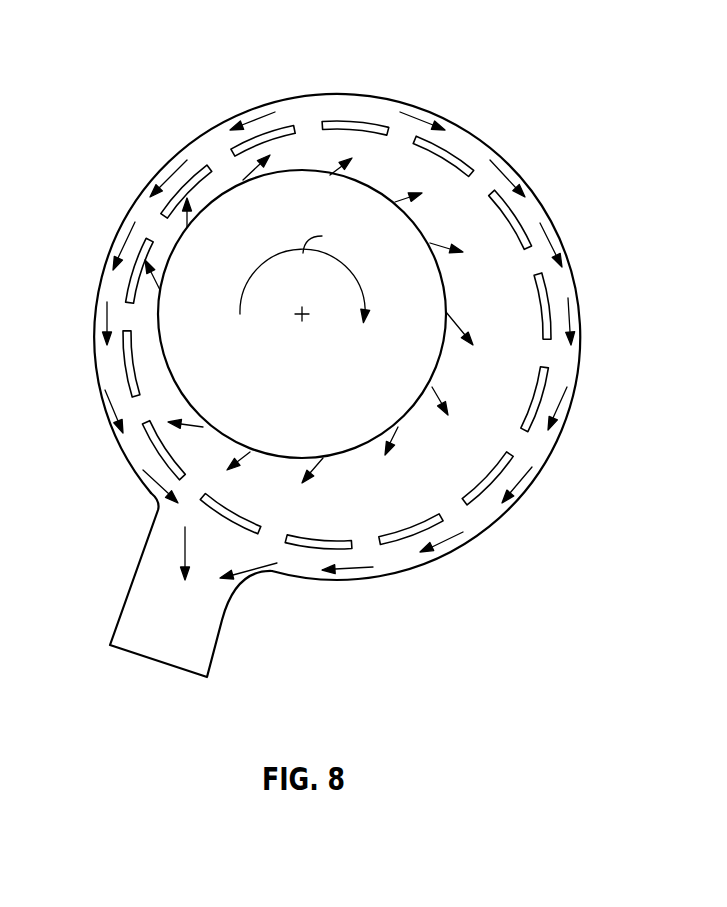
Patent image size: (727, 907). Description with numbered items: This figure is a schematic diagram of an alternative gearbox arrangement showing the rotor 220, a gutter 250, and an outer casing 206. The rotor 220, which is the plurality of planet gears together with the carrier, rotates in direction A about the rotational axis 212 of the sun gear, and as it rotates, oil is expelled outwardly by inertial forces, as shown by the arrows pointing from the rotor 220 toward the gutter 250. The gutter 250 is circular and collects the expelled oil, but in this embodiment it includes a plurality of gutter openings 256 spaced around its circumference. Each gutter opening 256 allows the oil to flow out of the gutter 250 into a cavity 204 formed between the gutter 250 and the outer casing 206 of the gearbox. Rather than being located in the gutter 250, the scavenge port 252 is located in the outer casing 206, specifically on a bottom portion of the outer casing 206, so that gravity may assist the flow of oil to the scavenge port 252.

The cavity 204 is at (388, 563).
The outer casing 206 is at (490, 526).
The rotational axis 212 is at (300, 316).
The rotor 220 is at (207, 383).
The gutter 250 is at (355, 123).
The scavenge port 252 is at (145, 672).
The gutter openings 256 is at (483, 180).